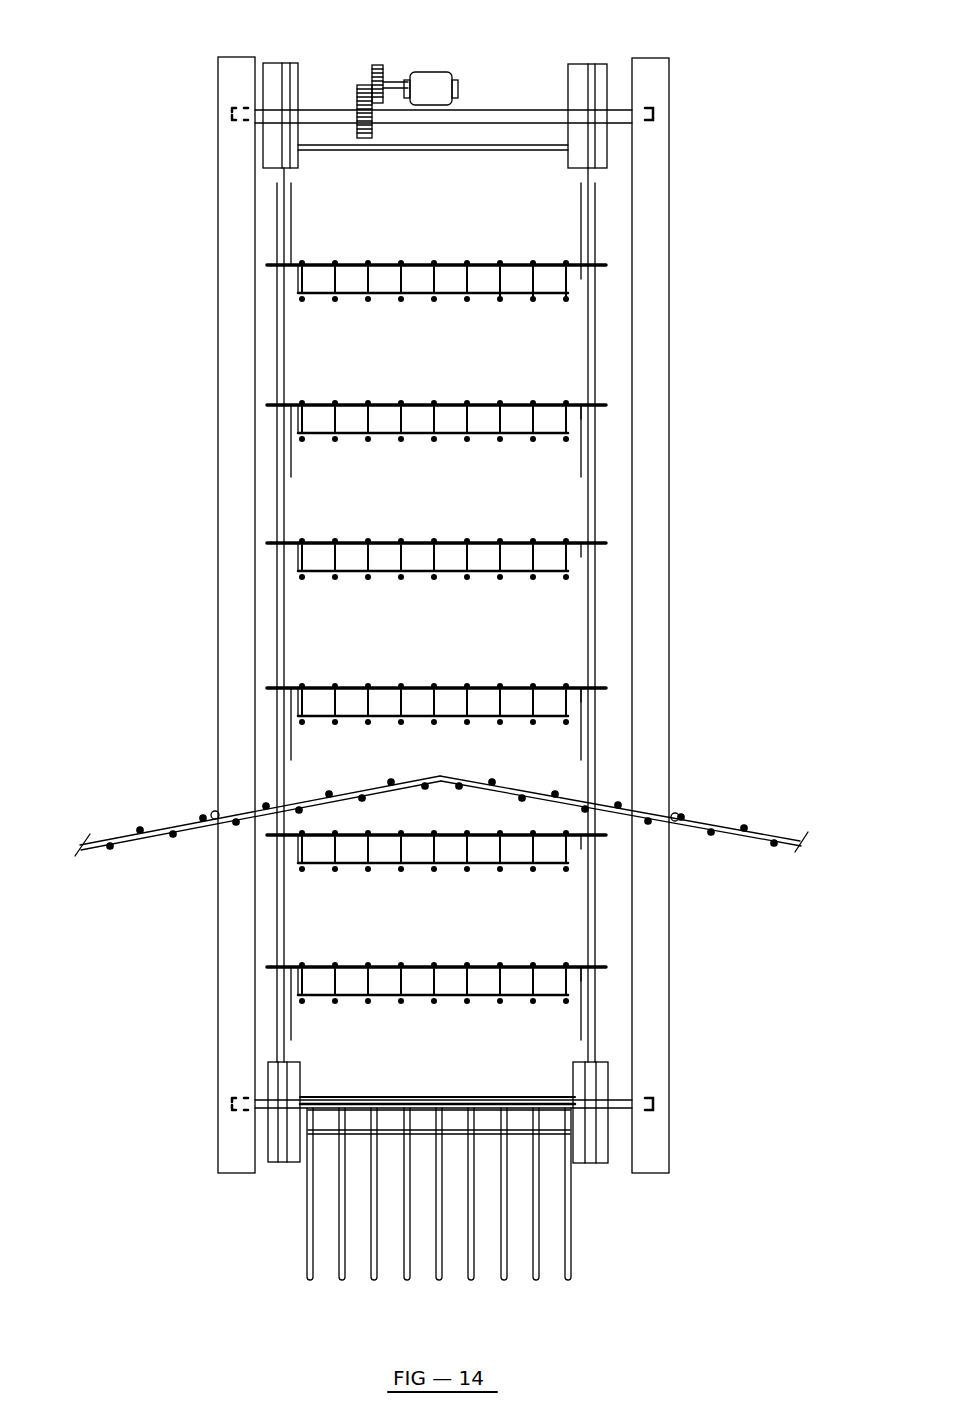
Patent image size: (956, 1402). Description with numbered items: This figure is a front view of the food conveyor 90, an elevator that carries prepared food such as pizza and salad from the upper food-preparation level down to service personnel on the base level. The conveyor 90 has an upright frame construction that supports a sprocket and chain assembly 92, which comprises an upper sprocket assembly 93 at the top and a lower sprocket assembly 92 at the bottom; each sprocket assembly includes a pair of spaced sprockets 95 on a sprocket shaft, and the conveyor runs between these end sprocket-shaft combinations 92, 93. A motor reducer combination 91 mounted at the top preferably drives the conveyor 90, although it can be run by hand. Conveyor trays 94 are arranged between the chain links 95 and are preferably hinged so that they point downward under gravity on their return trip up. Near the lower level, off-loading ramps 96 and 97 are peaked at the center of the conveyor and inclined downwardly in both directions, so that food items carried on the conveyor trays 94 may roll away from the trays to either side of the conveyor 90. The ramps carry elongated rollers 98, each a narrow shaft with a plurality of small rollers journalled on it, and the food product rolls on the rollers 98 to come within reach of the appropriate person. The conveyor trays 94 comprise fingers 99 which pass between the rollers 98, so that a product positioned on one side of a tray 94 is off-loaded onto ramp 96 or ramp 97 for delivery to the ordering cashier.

The conveyor 90 is at (685, 52).
The motor reducer combination 91 is at (430, 80).
The sprocket and chain assembly 92 is at (441, 955).
The upper sprocket assembly 93 is at (228, 117).
The conveyor tray 94 is at (318, 287).
The sprocket 95 is at (597, 510).
The off-loading ramp 96 is at (140, 833).
The off-loading ramp 97 is at (660, 823).
The elongated roller 98 is at (215, 815).
The finger 99 is at (565, 292).